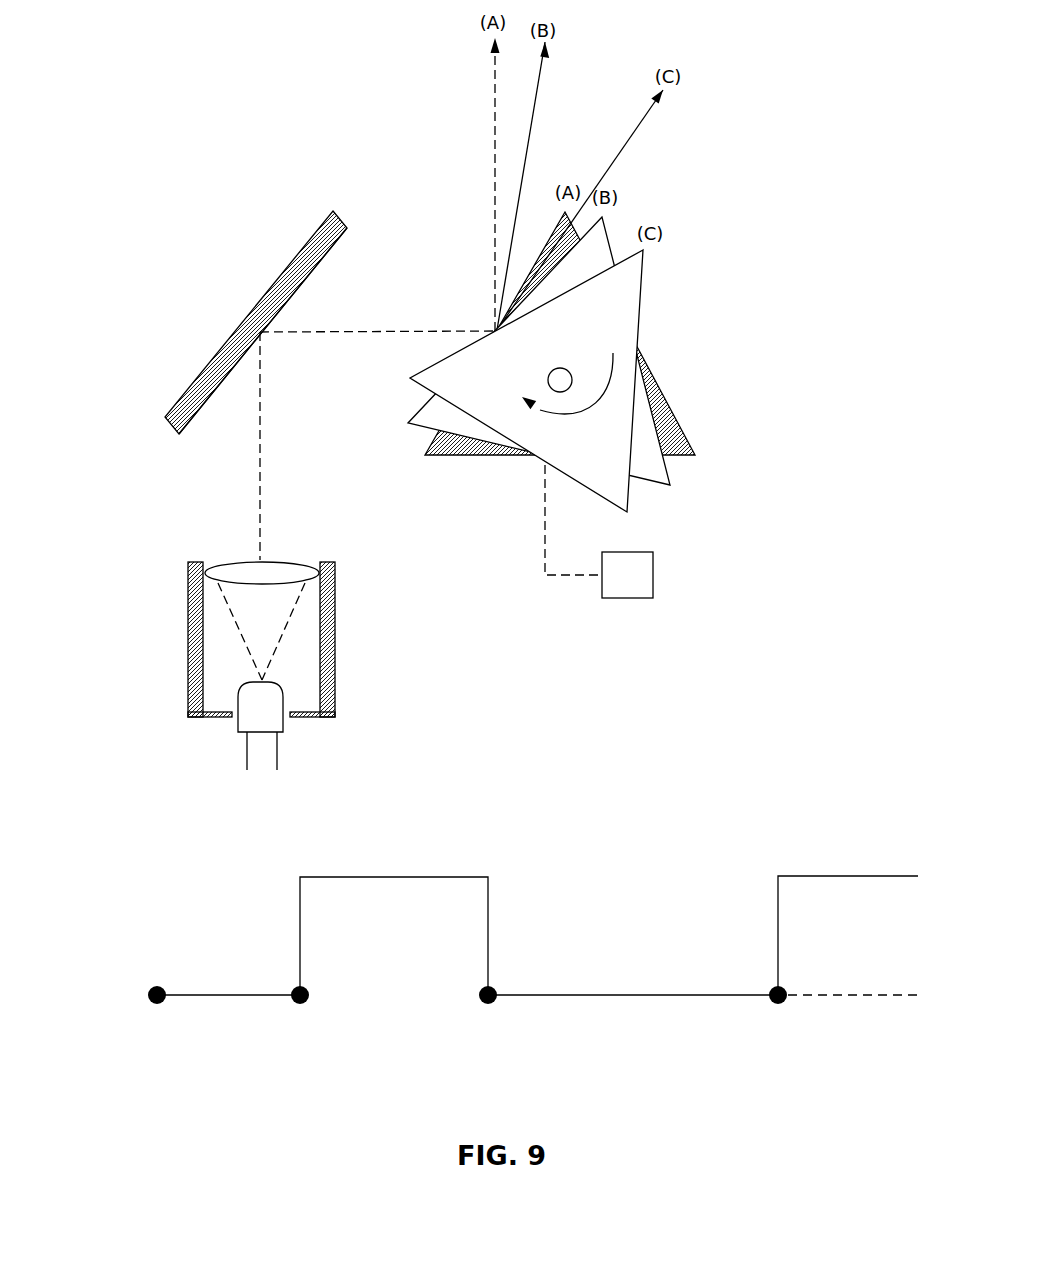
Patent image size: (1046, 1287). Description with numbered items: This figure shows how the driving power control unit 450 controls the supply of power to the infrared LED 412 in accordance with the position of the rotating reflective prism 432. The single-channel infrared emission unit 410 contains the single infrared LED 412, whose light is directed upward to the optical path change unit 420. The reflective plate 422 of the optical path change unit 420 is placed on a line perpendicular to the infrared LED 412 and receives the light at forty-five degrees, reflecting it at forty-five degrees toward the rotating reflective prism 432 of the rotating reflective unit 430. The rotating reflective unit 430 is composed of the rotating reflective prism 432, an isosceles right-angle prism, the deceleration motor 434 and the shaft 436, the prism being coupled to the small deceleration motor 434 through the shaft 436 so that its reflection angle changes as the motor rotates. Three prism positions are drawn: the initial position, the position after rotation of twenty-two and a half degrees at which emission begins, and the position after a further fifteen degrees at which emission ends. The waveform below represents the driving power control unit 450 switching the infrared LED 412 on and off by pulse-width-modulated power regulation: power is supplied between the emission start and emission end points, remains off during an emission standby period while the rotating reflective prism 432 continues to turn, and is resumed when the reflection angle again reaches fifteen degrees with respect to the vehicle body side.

The single-channel infrared emission unit 410 is at (323, 666).
The infrared LED 412 is at (270, 718).
The optical path change unit 420 is at (245, 311).
The reflective plate 422 is at (205, 407).
The rotating reflective unit 430 is at (628, 405).
The rotating reflective prism 432 is at (636, 370).
The deceleration motor 434 is at (662, 531).
The shaft 436 is at (561, 378).
The driving power control unit 450 is at (397, 873).